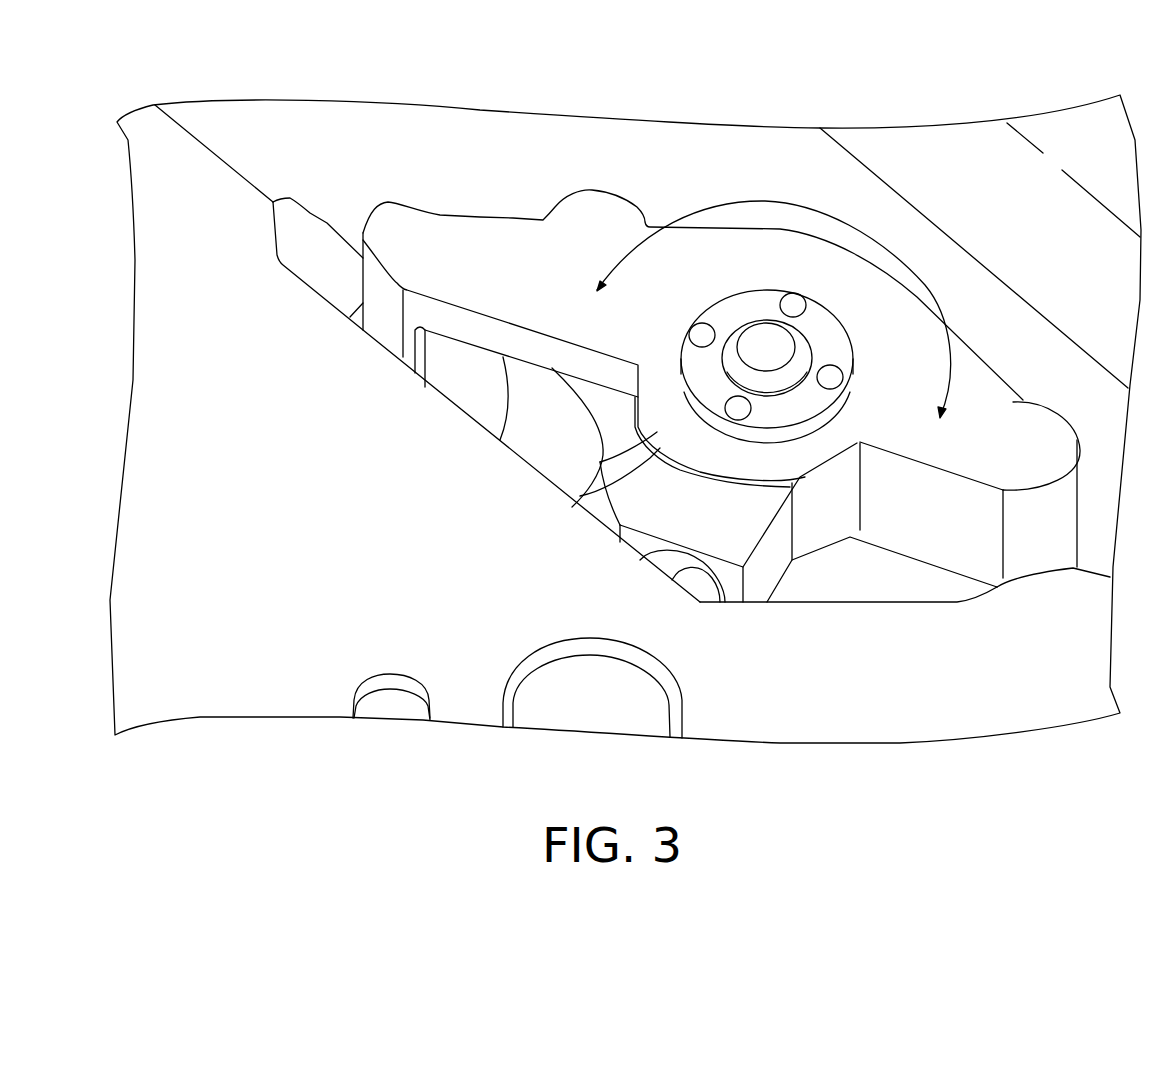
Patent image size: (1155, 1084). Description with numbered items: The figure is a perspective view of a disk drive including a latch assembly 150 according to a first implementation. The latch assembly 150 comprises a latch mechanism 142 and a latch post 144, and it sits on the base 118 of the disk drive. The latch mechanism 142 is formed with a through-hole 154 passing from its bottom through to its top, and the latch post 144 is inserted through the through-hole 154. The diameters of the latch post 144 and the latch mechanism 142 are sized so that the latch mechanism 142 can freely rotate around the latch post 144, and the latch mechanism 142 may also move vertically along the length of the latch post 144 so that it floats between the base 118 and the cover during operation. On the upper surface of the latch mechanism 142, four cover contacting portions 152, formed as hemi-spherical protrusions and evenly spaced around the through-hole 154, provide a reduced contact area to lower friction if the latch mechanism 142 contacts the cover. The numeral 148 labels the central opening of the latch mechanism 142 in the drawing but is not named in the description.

The base 118 is at (988, 213).
The latch mechanism 142 is at (463, 262).
The latch post 144 is at (756, 320).
The bore 148 is at (758, 353).
The latch assembly 150 is at (358, 152).
The cover contacting portions 152 is at (820, 387).
The through-hole 154 is at (797, 331).